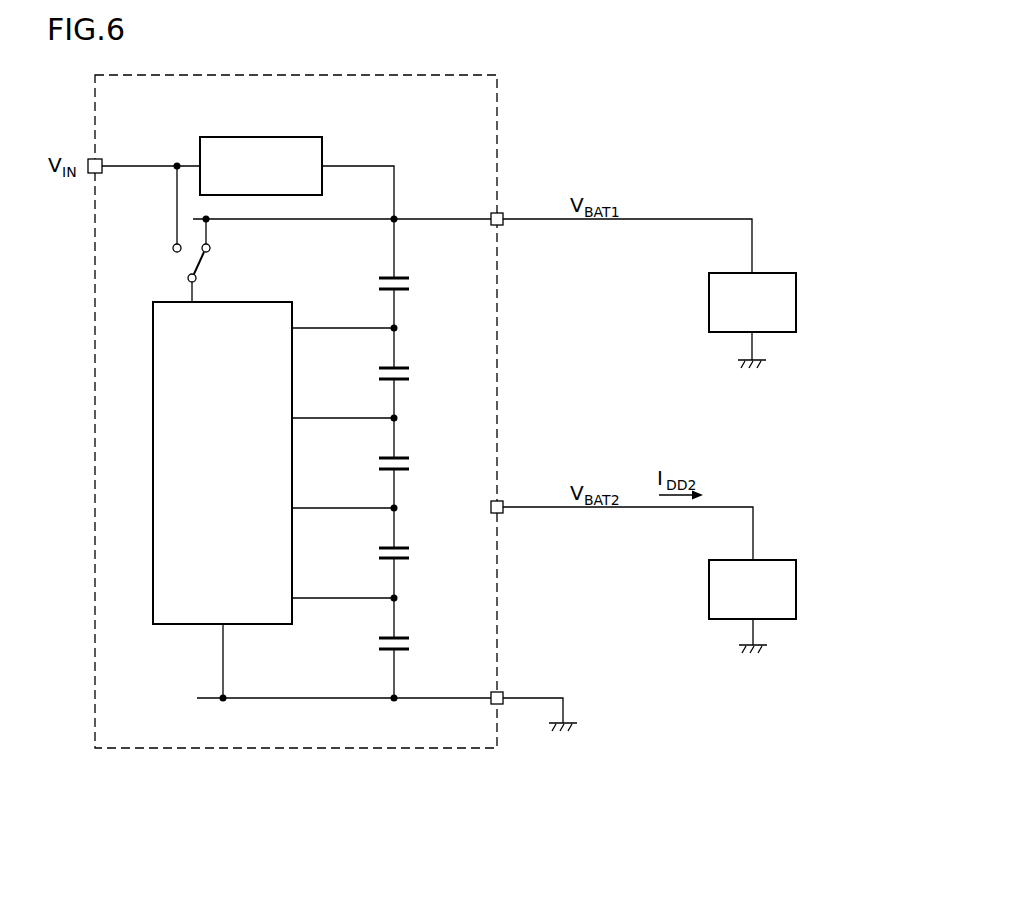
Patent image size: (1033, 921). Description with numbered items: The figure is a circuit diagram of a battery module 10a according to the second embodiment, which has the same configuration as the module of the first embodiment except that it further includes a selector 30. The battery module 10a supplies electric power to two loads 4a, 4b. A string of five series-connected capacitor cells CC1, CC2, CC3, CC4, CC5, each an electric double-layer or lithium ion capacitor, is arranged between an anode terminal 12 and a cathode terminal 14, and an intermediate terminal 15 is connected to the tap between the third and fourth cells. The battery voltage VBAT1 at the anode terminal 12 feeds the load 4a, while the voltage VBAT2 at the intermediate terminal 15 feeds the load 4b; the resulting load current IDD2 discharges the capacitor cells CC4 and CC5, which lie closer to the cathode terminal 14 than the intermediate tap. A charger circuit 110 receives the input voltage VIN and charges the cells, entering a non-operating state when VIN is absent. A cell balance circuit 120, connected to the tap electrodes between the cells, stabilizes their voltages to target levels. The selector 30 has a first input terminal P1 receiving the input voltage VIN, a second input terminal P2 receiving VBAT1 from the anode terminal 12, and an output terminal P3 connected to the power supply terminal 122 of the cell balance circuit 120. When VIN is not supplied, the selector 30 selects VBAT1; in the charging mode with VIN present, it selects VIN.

The battery module 10a is at (328, 748).
The charger circuit 110 is at (285, 137).
The cell balance circuit 120 is at (176, 625).
The power supply terminal 122 is at (194, 301).
The selector 30 is at (186, 250).
The first input terminal P1 is at (174, 246).
The second input terminal P2 is at (214, 248).
The output terminal P3 is at (187, 279).
The anode terminal 12 is at (503, 213).
The intermediate terminal 15 is at (503, 501).
The cathode terminal 14 is at (503, 692).
The load 4a is at (798, 303).
The load 4b is at (798, 583).
The capacitor cell CC1 is at (415, 284).
The capacitor cell CC2 is at (415, 374).
The capacitor cell CC3 is at (415, 464).
The capacitor cell CC4 is at (415, 554).
The capacitor cell CC5 is at (415, 644).